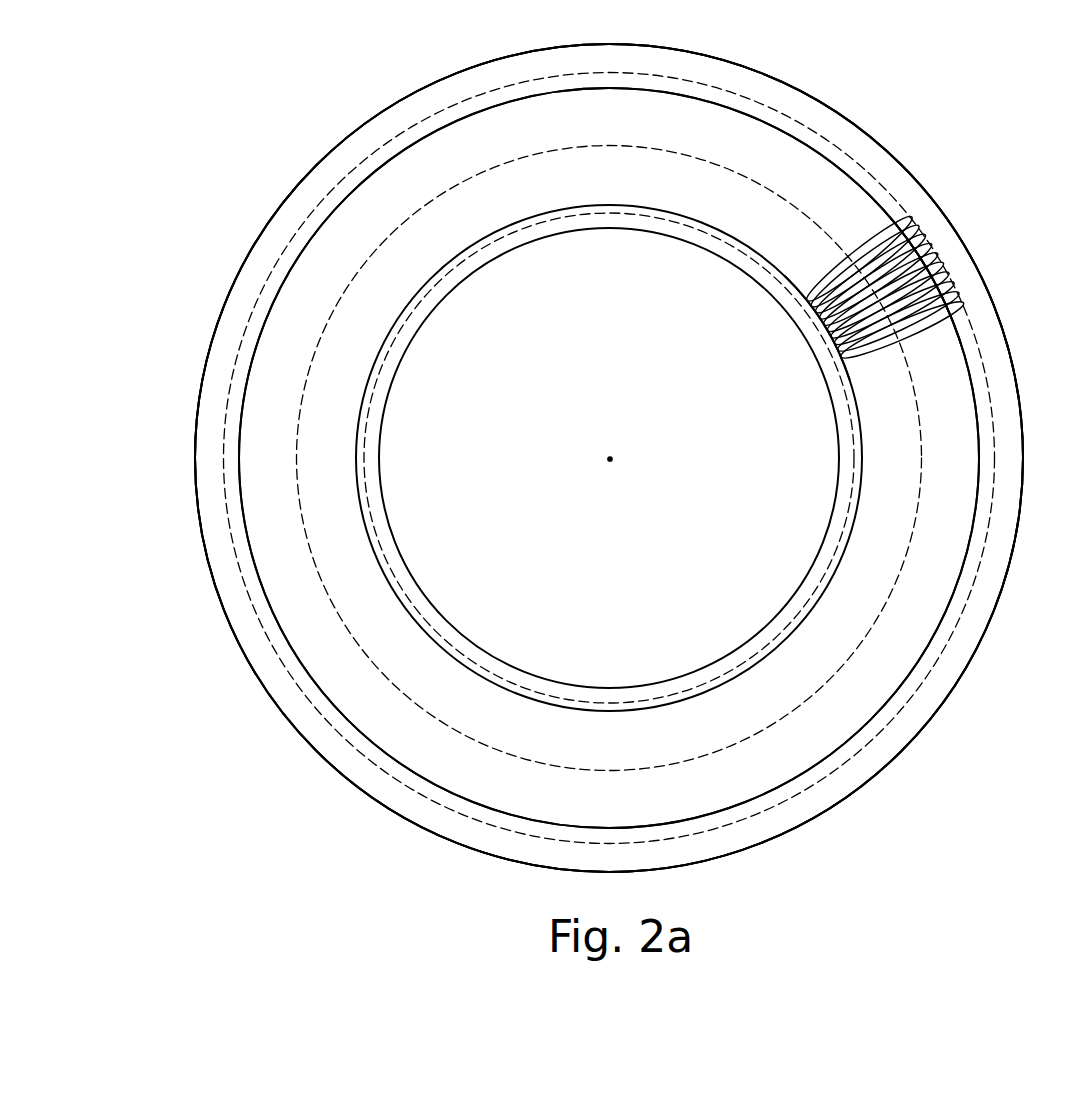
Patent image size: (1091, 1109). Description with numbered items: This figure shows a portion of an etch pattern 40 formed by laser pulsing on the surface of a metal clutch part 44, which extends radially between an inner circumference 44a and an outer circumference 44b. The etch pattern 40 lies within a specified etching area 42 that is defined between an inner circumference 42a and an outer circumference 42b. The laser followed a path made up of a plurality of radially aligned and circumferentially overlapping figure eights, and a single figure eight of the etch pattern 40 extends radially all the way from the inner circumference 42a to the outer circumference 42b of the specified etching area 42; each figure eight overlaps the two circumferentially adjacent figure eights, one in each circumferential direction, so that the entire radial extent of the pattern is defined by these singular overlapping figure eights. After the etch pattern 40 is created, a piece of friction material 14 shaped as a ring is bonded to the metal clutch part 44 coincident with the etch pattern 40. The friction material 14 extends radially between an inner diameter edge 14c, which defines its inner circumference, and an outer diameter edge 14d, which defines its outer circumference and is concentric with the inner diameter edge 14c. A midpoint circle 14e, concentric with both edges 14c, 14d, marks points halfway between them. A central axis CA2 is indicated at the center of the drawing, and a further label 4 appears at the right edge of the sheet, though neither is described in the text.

The friction material 14 is at (976, 584).
The inner diameter edge 14c is at (400, 320).
The outer diameter edge 14d is at (362, 182).
The midpoint circle 14e is at (880, 615).
The etch pattern 40 is at (857, 354).
The specified etching area 42 is at (925, 205).
The inner circumference 42a is at (815, 590).
The outer circumference 42b is at (877, 168).
The metal clutch part 44 is at (920, 763).
The inner circumference 44a is at (832, 403).
The outer circumference 44b is at (860, 122).
The central axis CA2 is at (608, 462).
The partially visible numeral 4 is at (1087, 605).